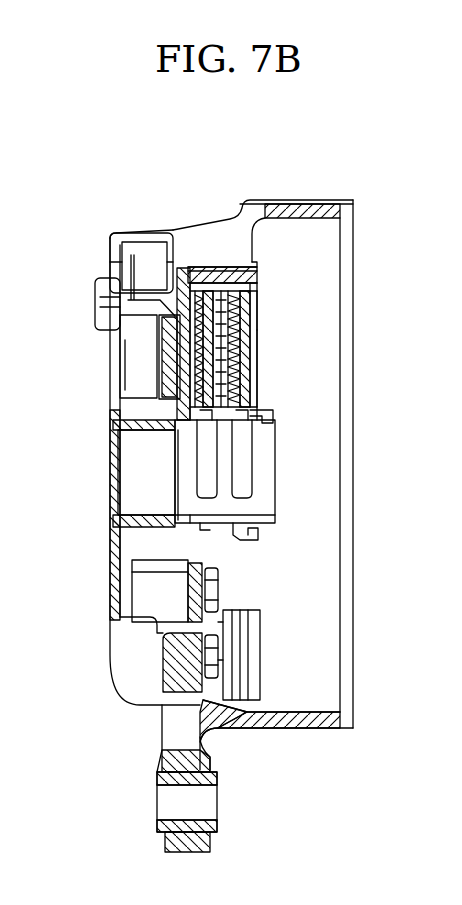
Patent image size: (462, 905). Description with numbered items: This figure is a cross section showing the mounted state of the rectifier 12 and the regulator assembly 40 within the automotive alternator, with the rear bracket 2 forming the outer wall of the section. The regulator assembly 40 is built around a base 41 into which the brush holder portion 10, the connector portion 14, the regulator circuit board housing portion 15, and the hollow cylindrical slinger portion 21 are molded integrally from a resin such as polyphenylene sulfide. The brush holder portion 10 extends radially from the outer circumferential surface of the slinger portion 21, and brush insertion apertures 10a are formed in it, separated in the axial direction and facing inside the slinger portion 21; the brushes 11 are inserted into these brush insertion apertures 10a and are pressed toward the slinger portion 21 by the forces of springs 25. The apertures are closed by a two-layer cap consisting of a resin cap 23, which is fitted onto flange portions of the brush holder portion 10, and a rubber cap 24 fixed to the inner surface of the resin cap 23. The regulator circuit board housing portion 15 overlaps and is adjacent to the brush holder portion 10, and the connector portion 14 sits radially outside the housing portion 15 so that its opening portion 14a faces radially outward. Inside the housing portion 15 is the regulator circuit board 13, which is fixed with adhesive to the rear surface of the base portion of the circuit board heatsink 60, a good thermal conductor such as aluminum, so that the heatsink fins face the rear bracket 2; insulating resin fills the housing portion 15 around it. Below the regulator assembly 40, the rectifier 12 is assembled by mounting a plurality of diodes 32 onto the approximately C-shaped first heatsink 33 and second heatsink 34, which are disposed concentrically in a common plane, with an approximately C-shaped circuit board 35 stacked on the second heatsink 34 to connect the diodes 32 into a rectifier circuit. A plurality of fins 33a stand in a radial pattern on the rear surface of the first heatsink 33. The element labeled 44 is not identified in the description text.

The rear bracket 2 is at (353, 212).
The brush holder portion 10 is at (258, 350).
The brush insertion apertures 10a is at (258, 372).
The brushes 11 is at (244, 457).
The rectifier 12 is at (265, 604).
The regulator circuit board 13 is at (127, 325).
The connector portion 14 is at (115, 252).
The opening portion 14a is at (135, 252).
The regulator circuit board housing portion 15 is at (143, 407).
The slinger portion 21 is at (262, 522).
The resin cap 23 is at (251, 276).
The rubber cap 24 is at (251, 286).
The springs 25 is at (252, 320).
The diodes 32 is at (215, 588).
The first heatsink 33 is at (182, 597).
The fins 33a is at (160, 578).
The second heatsink 34 is at (200, 672).
The circuit board 35 is at (258, 652).
The regulator assembly 40 is at (262, 392).
The base 41 is at (262, 403).
The end plate 44 is at (253, 261).
The circuit board heatsink 60 is at (147, 367).